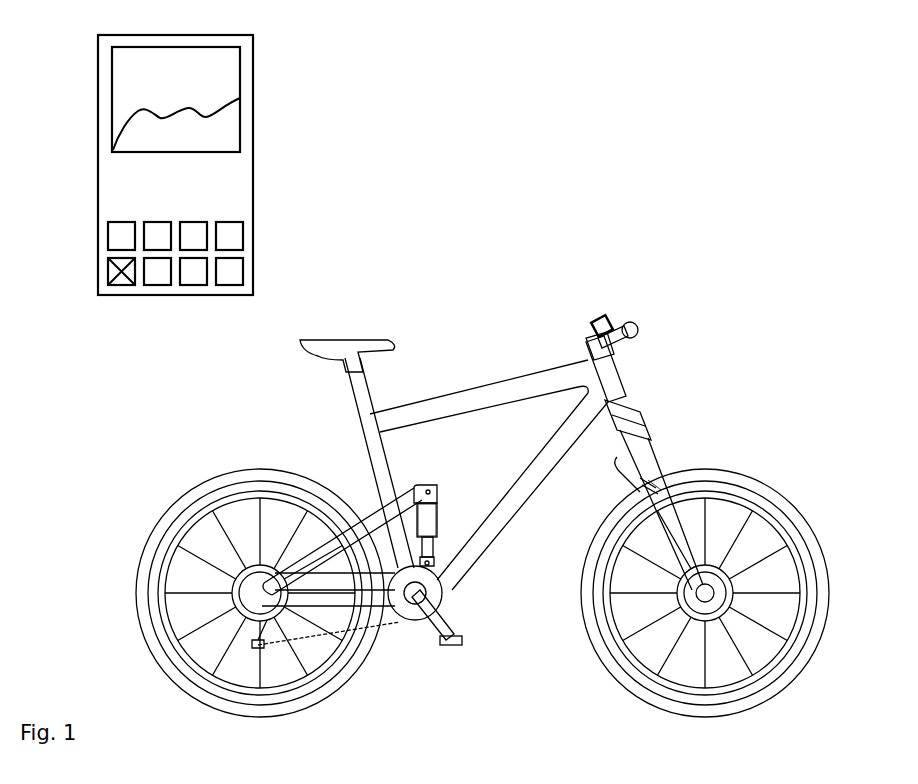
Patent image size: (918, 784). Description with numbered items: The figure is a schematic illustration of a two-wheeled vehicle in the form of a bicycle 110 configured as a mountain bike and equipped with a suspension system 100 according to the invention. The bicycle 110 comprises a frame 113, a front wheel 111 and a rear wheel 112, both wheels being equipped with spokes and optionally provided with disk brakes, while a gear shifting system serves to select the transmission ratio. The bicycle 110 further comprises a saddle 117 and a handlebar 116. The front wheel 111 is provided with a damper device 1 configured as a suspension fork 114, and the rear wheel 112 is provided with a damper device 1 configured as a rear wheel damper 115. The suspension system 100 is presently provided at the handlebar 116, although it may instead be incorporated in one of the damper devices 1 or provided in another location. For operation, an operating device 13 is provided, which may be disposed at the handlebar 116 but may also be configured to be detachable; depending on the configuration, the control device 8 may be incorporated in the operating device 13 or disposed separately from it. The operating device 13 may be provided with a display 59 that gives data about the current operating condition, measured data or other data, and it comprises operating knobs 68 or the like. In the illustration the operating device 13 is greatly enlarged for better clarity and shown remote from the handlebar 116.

The damper device 1 is at (420, 517).
The control device 8 is at (585, 327).
The operating device 13 is at (148, 178).
The display 59 is at (153, 62).
The operating knobs 68 is at (230, 286).
The suspension system 100 is at (600, 320).
The bicycle 110 is at (441, 484).
The front wheel 111 is at (775, 470).
The rear wheel 112 is at (137, 548).
The frame 113 is at (510, 390).
The suspension fork 114 is at (692, 466).
The rear wheel damper 115 is at (437, 510).
The handlebar 116 is at (633, 322).
The saddle 117 is at (368, 332).